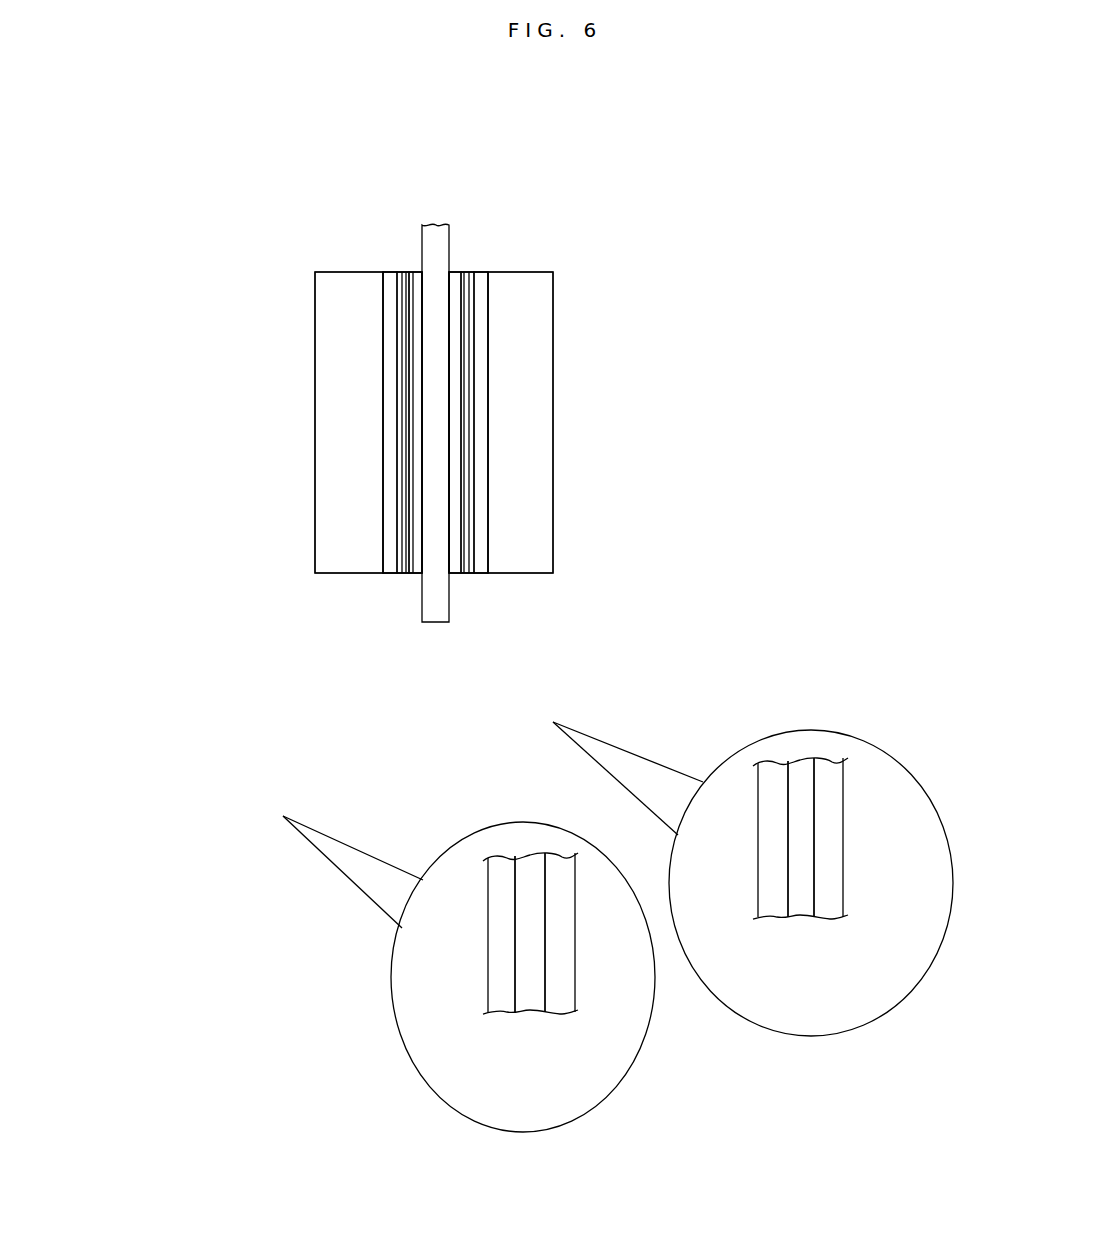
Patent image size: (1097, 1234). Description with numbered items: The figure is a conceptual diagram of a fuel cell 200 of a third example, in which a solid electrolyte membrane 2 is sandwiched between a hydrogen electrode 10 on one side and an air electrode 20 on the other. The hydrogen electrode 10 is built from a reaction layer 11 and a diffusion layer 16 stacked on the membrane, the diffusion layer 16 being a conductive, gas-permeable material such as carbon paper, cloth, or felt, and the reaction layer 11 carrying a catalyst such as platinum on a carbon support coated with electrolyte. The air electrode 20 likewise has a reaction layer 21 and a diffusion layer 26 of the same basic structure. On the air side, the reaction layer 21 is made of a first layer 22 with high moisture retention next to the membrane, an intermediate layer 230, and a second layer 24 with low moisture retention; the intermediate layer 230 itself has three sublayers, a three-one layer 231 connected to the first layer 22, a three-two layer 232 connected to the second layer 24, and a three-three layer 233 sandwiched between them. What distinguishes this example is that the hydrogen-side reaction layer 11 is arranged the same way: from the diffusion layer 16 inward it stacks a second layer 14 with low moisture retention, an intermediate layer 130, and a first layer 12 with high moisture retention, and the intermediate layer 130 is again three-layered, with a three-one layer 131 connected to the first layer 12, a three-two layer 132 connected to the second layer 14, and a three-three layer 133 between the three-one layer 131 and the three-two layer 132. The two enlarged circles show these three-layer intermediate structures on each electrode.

The fuel cell 200 is at (540, 168).
The solid electrolyte membrane 2 is at (437, 222).
The hydrogen electrode 10 is at (296, 307).
The air electrode 20 is at (574, 309).
The diffusion layer 16 is at (315, 271).
The diffusion layer 26 is at (553, 271).
The reaction layer 11 is at (397, 271).
The reaction layer 21 is at (476, 271).
The second layer 14 is at (390, 533).
The second layer 24 is at (485, 574).
The first layer 12 is at (412, 575).
The first layer 22 is at (455, 575).
The intermediate layer 130 is at (401, 575).
The intermediate layer 230 is at (469, 574).
The 3-1 layer 131 is at (558, 1002).
The 3-2 layer 132 is at (507, 1002).
The 3-3 layer 133 is at (530, 1002).
The 3-1 layer 231 is at (777, 903).
The 3-2 layer 232 is at (825, 905).
The 3-3 layer 233 is at (800, 905).